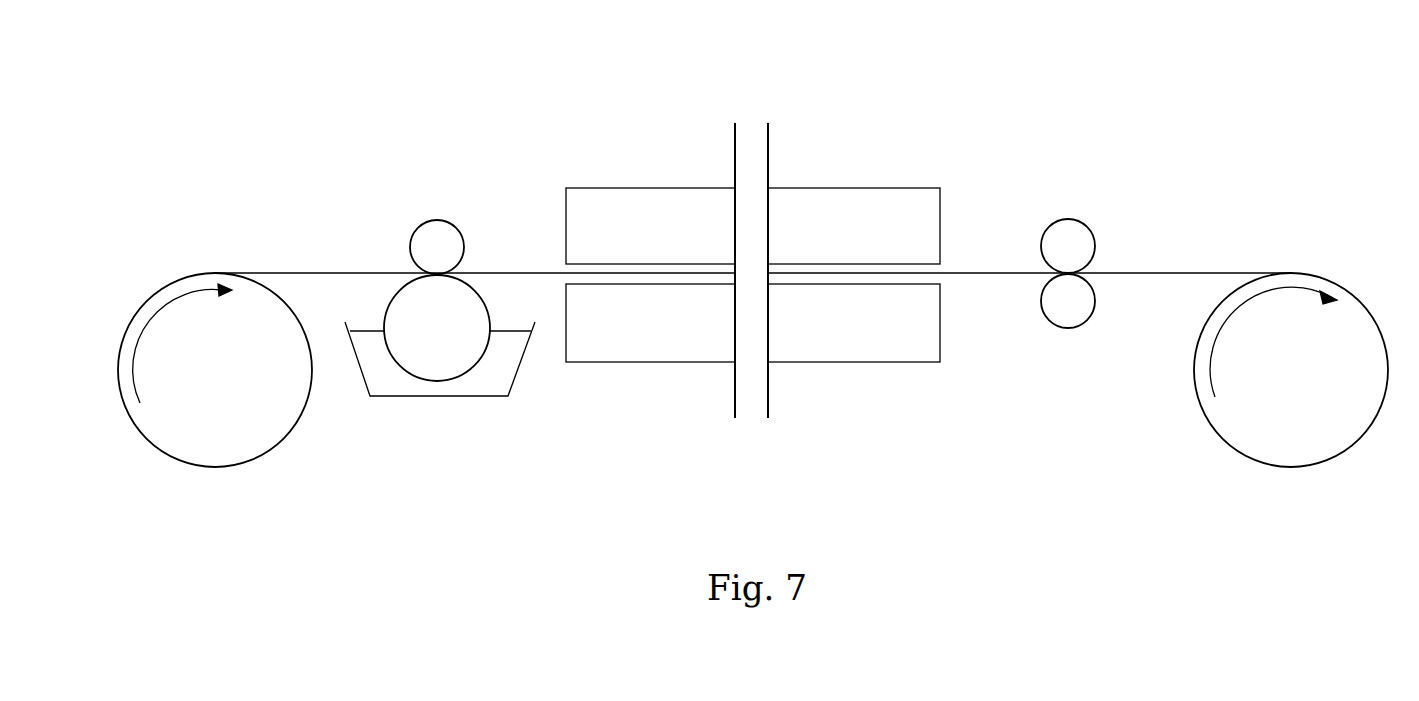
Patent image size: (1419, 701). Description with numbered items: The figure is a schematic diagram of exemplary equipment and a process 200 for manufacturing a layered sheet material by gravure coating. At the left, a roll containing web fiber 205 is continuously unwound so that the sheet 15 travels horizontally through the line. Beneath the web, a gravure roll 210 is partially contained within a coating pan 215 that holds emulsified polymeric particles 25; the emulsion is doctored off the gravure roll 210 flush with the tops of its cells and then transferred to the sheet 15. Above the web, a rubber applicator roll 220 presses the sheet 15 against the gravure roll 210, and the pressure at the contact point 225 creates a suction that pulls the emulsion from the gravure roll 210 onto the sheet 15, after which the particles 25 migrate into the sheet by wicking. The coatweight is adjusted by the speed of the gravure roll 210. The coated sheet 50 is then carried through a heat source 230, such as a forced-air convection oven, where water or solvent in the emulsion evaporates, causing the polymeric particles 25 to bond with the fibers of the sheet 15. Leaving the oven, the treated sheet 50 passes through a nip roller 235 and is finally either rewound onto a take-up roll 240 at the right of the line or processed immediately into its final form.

The sheet 15 is at (370, 273).
The emulsified polymeric particles 25 is at (460, 390).
The coated sheet 50 is at (1197, 272).
The process 200 is at (962, 162).
The roll containing web fiber 205 is at (225, 465).
The gravure roll 210 is at (388, 308).
The coating pan 215 is at (478, 403).
The rubber applicator roll 220 is at (434, 219).
The contact point 225 is at (437, 273).
The heat source 230 is at (805, 210).
The nip roller 235 is at (1097, 268).
The take-up roll 240 is at (1252, 435).